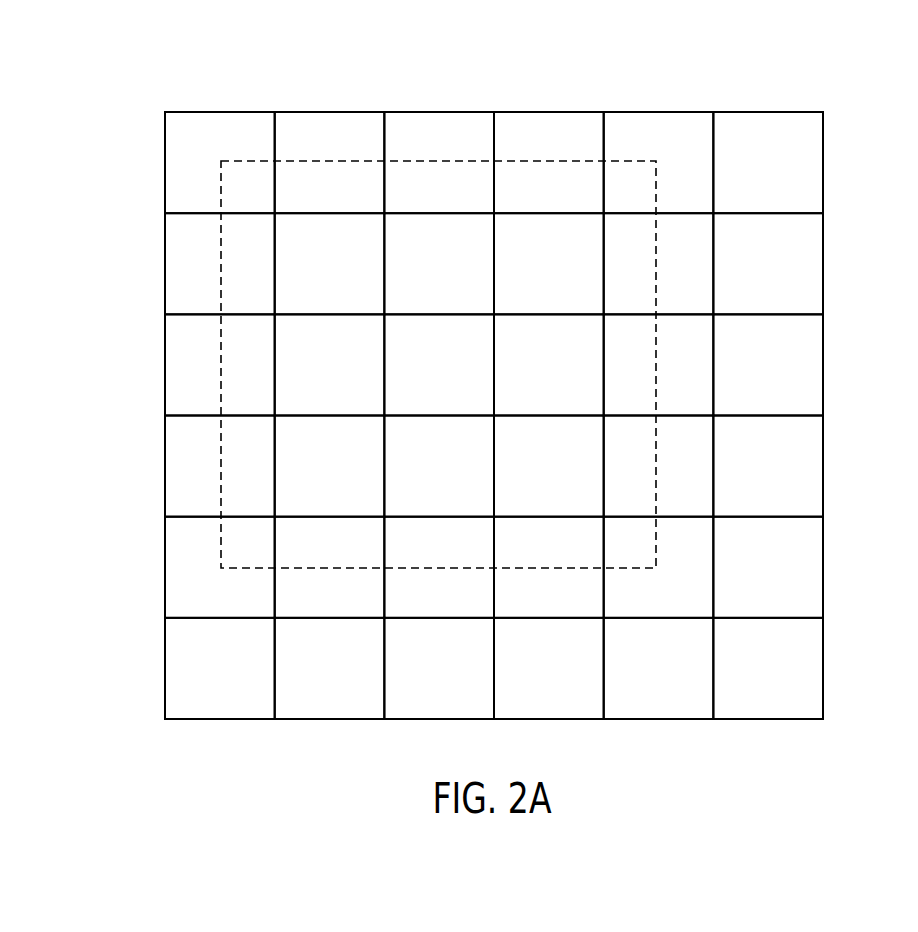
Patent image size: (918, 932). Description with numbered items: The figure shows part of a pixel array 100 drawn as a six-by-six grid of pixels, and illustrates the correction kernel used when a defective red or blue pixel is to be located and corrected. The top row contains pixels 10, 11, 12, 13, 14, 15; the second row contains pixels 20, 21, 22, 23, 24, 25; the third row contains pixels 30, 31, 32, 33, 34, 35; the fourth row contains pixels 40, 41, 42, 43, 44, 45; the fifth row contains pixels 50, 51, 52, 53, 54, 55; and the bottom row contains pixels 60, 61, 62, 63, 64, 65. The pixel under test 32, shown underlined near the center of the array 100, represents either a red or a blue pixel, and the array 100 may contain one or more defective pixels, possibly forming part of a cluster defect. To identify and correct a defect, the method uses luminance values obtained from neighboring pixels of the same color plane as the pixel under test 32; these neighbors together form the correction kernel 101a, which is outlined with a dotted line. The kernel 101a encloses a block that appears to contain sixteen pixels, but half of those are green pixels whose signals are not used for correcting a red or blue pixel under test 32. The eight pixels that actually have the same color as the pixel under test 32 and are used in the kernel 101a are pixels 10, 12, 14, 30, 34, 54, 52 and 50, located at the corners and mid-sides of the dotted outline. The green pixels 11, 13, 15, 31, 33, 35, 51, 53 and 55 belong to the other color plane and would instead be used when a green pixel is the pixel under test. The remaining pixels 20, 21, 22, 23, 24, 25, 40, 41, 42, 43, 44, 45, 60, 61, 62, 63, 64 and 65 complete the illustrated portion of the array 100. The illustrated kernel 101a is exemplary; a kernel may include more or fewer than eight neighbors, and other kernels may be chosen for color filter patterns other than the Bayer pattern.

The pixel array 100 is at (440, 374).
The correction kernel 101a is at (218, 327).
The pixel 10 is at (220, 162).
The pixel 11 is at (330, 162).
The pixel 12 is at (439, 162).
The pixel 13 is at (549, 162).
The pixel 14 is at (659, 162).
The pixel 15 is at (768, 162).
The pixel 20 is at (220, 263).
The pixel 21 is at (330, 263).
The pixel 22 is at (439, 263).
The pixel 23 is at (549, 263).
The pixel 24 is at (659, 263).
The pixel 25 is at (768, 263).
The pixel 30 is at (220, 364).
The pixel 31 is at (330, 364).
The pixel under test 32 is at (429, 376).
The pixel 33 is at (549, 364).
The pixel 34 is at (659, 364).
The pixel 35 is at (768, 364).
The pixel 40 is at (220, 466).
The pixel 41 is at (330, 466).
The pixel 42 is at (439, 466).
The pixel 43 is at (549, 466).
The pixel 44 is at (659, 466).
The pixel 45 is at (768, 466).
The pixel 50 is at (220, 567).
The pixel 51 is at (330, 567).
The pixel 52 is at (439, 567).
The pixel 53 is at (549, 567).
The pixel 54 is at (659, 567).
The pixel 55 is at (768, 567).
The pixel 60 is at (220, 668).
The pixel 61 is at (330, 668).
The pixel 62 is at (439, 668).
The pixel 63 is at (549, 668).
The pixel 64 is at (659, 668).
The pixel 65 is at (768, 668).